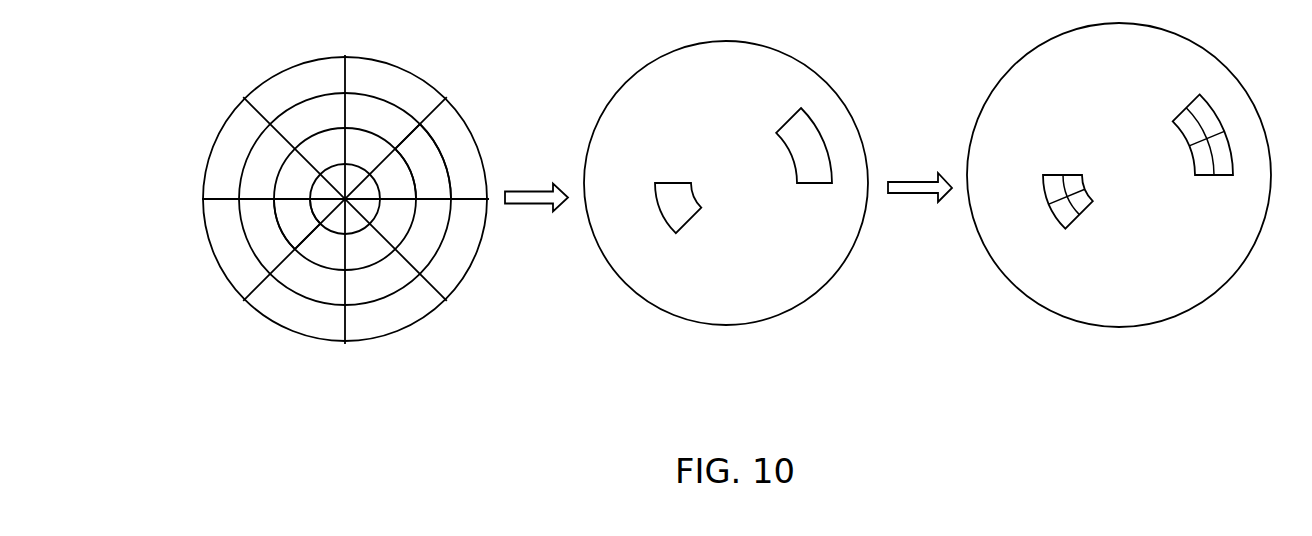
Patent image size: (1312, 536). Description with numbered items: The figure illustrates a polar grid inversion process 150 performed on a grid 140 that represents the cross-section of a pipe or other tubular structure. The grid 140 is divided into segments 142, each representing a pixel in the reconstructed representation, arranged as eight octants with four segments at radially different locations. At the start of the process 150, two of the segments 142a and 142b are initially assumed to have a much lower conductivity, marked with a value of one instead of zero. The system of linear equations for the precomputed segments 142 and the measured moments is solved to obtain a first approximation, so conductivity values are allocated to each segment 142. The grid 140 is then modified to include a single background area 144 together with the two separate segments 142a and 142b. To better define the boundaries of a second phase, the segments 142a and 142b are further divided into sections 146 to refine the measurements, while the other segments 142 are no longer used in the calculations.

The grid 140 is at (245, 316).
The segment 142 is at (265, 92).
The segment 142a is at (285, 210).
The segment 142b is at (420, 148).
The background area 144 is at (798, 98).
The section 146 is at (1053, 183).
The polar grid inversion process 150 is at (367, 393).